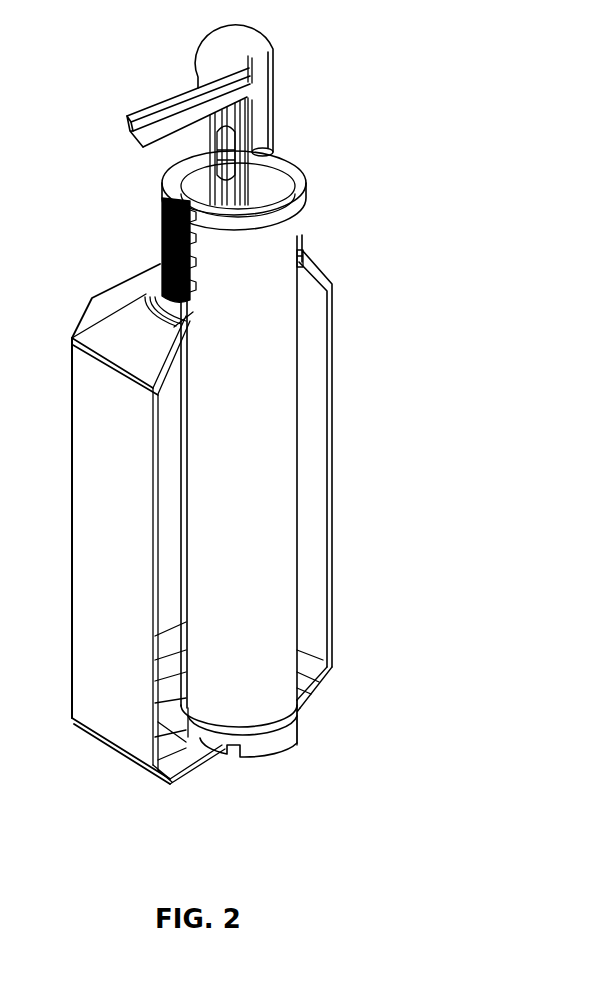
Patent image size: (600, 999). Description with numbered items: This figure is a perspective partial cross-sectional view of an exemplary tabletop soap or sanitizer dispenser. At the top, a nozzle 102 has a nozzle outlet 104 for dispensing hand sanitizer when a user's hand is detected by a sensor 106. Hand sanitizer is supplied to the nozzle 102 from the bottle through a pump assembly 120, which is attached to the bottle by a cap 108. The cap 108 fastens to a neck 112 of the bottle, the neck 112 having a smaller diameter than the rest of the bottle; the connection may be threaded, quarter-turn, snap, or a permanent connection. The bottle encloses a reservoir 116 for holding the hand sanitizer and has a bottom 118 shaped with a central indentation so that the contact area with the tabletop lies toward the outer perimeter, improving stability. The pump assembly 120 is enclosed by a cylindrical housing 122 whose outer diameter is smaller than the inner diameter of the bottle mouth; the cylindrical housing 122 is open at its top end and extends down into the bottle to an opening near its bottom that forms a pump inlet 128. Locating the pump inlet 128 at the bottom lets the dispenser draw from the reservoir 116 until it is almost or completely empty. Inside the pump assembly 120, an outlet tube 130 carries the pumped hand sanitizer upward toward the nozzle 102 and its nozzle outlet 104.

The nozzle 102 is at (168, 108).
The nozzle outlet 104 is at (122, 139).
The sensor 106 is at (236, 122).
The cap 108 is at (163, 247).
The neck 112 is at (300, 240).
The reservoir 116 is at (330, 464).
The bottom 118 is at (313, 701).
The pump assembly 120 is at (238, 425).
The cylindrical housing 122 is at (283, 617).
The pump inlet 128 is at (226, 762).
The outlet tube 130 is at (272, 190).